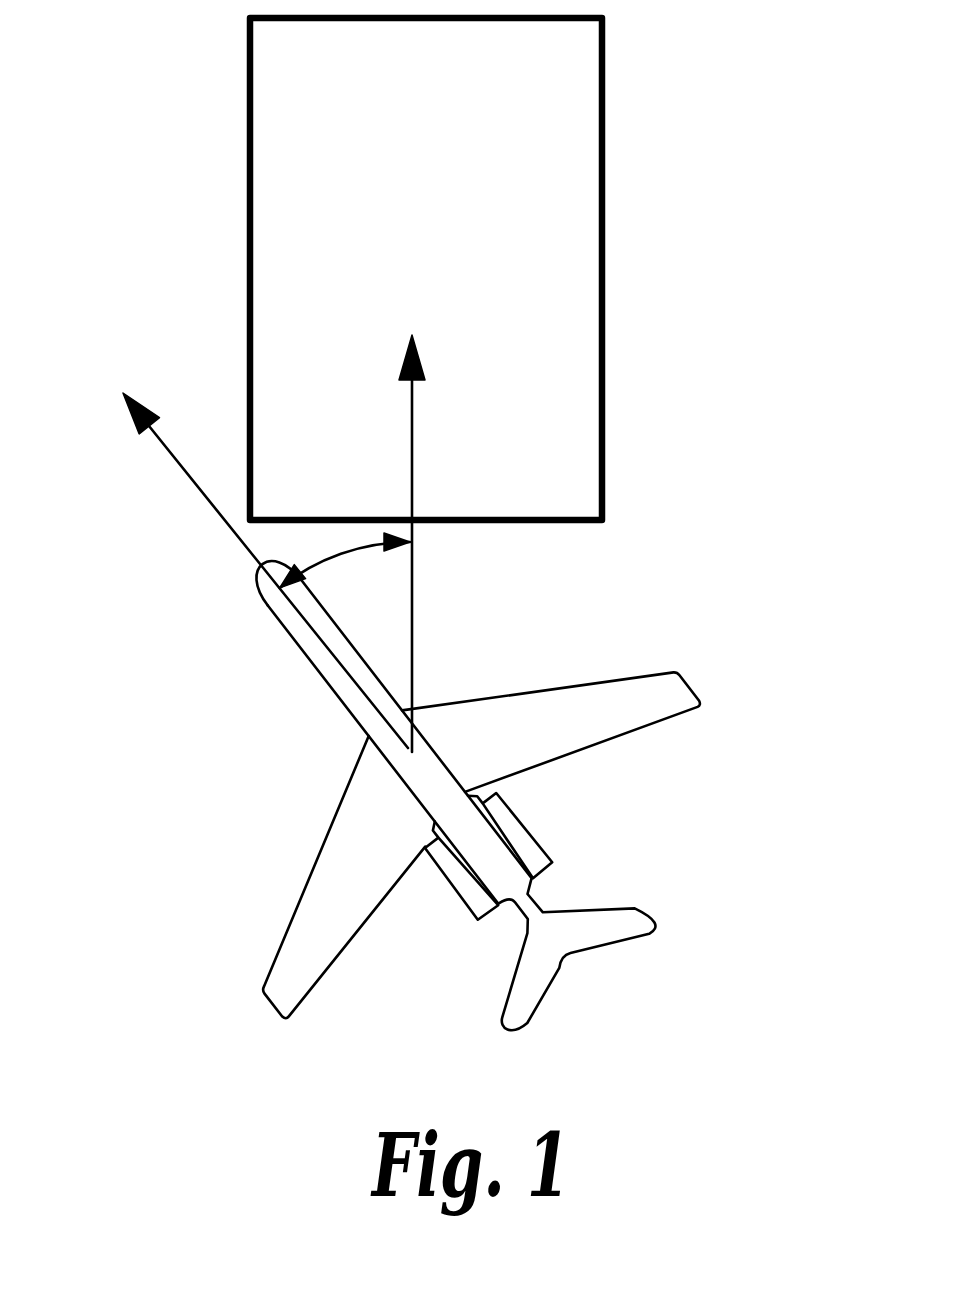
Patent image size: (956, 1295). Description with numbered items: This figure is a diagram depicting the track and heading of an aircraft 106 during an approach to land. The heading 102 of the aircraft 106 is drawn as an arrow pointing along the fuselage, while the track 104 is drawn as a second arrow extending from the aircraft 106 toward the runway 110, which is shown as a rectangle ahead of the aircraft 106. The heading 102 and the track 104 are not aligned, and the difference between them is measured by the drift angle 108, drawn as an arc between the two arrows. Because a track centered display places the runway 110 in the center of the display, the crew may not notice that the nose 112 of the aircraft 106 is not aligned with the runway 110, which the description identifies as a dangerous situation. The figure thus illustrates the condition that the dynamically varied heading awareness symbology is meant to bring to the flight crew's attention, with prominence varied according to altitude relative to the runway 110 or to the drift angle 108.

The heading 102 is at (182, 467).
The track 104 is at (412, 437).
The aircraft 106 is at (690, 687).
The drift angle 108 is at (340, 565).
The runway 110 is at (604, 171).
The nose 112 is at (257, 578).